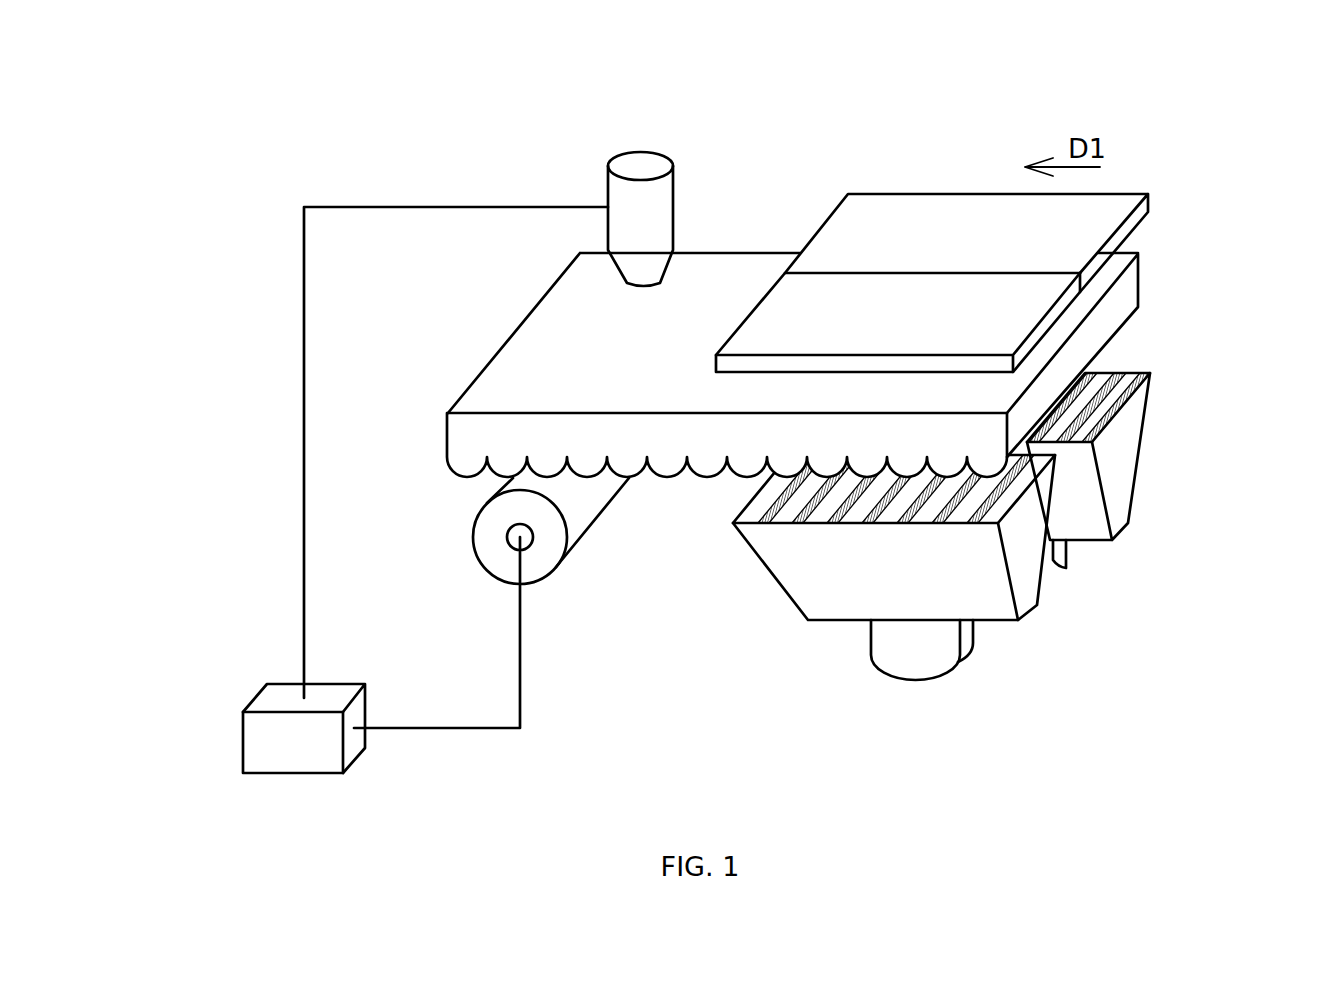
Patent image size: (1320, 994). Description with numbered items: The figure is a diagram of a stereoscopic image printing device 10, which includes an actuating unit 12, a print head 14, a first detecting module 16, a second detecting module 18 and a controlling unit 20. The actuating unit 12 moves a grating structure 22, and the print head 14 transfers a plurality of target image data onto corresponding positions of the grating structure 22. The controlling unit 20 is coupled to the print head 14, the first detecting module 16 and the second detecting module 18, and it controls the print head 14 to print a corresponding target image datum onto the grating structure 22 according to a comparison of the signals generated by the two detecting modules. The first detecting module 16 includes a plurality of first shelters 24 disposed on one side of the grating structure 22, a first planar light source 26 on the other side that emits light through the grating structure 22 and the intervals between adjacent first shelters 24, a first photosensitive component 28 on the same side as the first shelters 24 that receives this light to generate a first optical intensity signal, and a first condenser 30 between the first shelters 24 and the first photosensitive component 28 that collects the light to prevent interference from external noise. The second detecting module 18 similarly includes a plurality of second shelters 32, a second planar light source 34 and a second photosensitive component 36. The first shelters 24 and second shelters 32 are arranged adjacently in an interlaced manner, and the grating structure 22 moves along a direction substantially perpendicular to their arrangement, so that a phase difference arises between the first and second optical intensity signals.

The stereoscopic image printing device 10 is at (1140, 130).
The actuating unit 12 is at (490, 535).
The print head 14 is at (657, 200).
The first detecting module 16 is at (870, 640).
The second detecting module 18 is at (994, 441).
The controlling unit 20 is at (258, 732).
The grating structure 22 is at (458, 440).
The first shelters 24 is at (762, 503).
The first planar light source 26 is at (915, 358).
The first photosensitive component 28 is at (922, 647).
The first condenser 30 is at (840, 602).
The second shelters 32 is at (1077, 428).
The second planar light source 34 is at (1085, 247).
The second photosensitive component 36 is at (1050, 557).